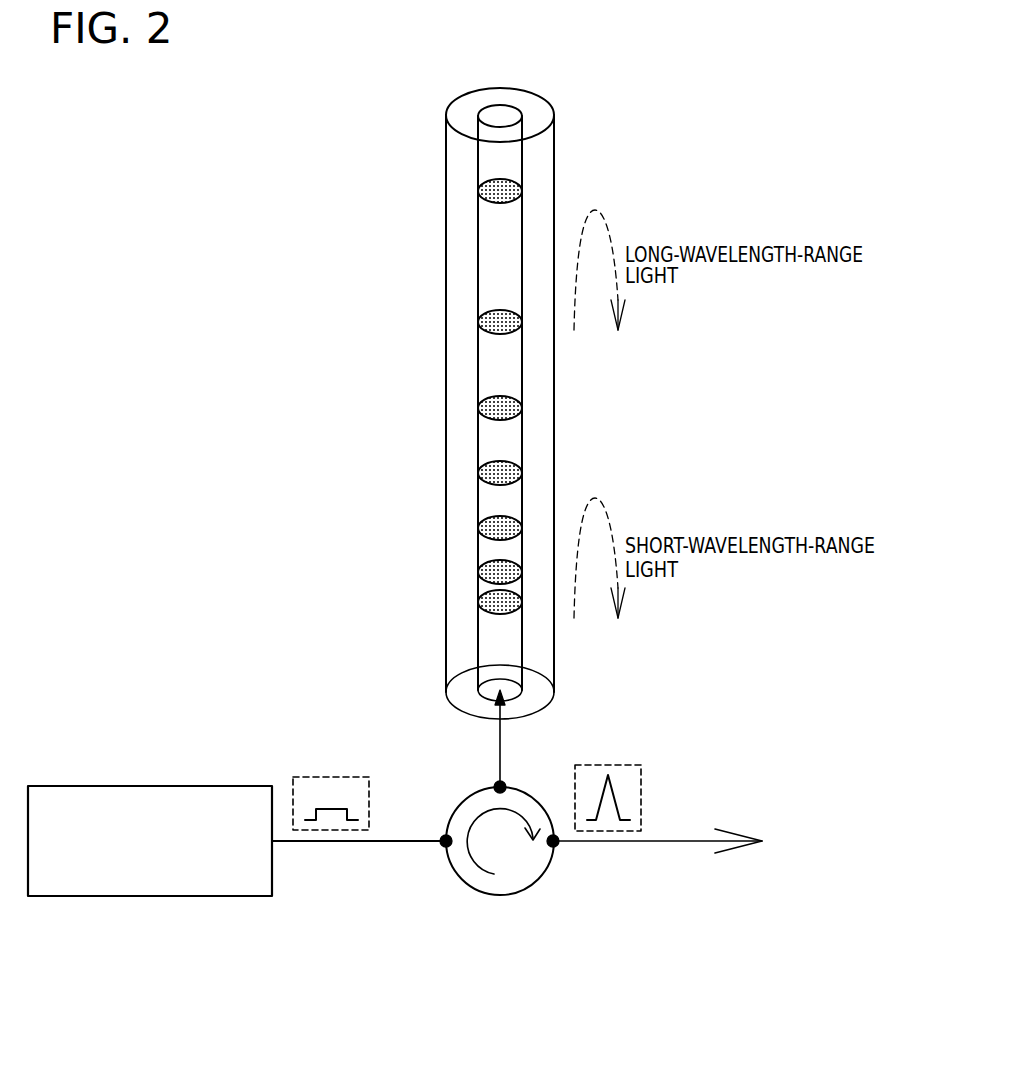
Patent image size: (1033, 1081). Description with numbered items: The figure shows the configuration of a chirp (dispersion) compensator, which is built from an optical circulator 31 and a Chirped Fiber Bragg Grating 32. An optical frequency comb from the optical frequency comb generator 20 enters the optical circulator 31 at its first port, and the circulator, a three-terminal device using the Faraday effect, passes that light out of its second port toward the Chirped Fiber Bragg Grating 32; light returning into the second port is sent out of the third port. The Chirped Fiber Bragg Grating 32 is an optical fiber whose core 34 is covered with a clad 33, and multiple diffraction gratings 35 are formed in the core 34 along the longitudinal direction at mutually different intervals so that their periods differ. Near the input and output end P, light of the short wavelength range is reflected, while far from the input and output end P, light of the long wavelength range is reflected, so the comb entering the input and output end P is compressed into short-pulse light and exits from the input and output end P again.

The optical frequency comb generator 20 is at (196, 897).
The optical circulator 31 is at (500, 896).
The Chirped Fiber Bragg Grating 32 is at (572, 140).
The clad 33 is at (455, 506).
The core 34 is at (495, 357).
The diffraction grating 35 is at (482, 196).
The input and output end P is at (497, 698).